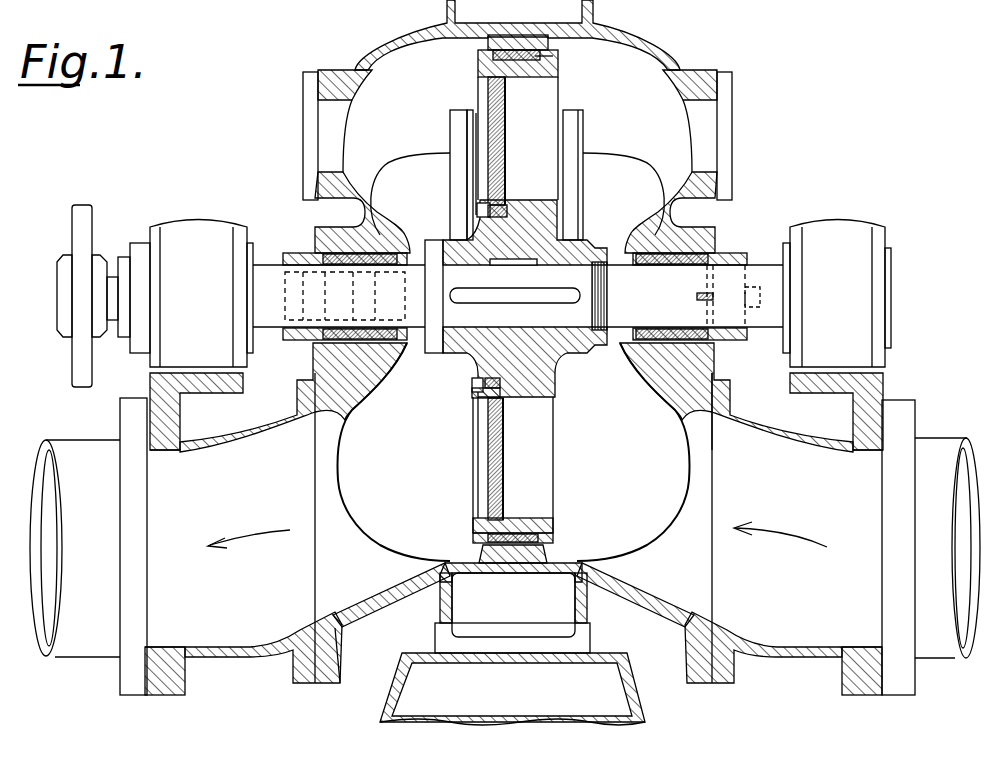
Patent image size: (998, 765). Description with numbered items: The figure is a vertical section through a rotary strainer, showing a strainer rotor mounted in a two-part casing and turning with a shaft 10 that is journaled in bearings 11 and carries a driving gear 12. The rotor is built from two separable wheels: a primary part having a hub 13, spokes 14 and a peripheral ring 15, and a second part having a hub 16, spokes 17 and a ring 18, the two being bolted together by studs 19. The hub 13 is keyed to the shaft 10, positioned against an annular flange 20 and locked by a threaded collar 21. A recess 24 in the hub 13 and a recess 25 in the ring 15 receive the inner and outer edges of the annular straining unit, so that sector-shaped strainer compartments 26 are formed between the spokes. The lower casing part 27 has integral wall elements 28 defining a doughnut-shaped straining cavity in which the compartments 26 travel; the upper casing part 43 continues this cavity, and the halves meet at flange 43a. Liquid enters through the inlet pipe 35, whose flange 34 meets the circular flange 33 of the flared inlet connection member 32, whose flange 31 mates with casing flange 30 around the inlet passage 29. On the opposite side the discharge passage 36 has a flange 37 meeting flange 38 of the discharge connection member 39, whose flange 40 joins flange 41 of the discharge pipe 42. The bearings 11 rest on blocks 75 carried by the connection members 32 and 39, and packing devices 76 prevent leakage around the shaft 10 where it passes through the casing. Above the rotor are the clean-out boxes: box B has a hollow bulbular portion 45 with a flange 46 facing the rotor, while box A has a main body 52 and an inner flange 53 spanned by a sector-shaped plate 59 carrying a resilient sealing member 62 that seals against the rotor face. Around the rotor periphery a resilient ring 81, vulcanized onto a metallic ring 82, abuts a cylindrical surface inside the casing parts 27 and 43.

The shaft 10 is at (260, 270).
The bearings 11 is at (196, 228).
The gear 12 is at (74, 230).
The hub 13 is at (535, 350).
The spokes 14 is at (546, 452).
The peripheral ring 15 is at (551, 524).
The hub 16 is at (476, 398).
The spokes 17 is at (475, 424).
The ring 18 is at (473, 530).
The studs 19 is at (506, 200).
The annular flange 20 is at (432, 355).
The threaded collar 21 is at (598, 355).
The recess 24 is at (506, 392).
The recess 25 is at (503, 510).
The strainer compartments 26 is at (548, 518).
The casing base part 27 is at (468, 568).
The wall elements 28 is at (340, 450).
The inlet passage 29 is at (656, 598).
The flange 30 is at (693, 662).
The flange 31 is at (735, 678).
The inlet connection member 32 is at (815, 655).
The flange 33 is at (852, 690).
The flange 34 is at (900, 685).
The inlet pipe 35 is at (946, 658).
The discharge passage 36 is at (360, 598).
The flange 37 is at (338, 633).
The flange 38 is at (293, 683).
The discharge connection member 39 is at (258, 640).
The flange 40 is at (181, 685).
The flange 41 is at (118, 680).
The discharge pipe 42 is at (82, 650).
The upper casing part 43 is at (380, 35).
The flange 43a is at (713, 228).
The hollow bulbular portion 45 is at (645, 172).
The flange 46 is at (584, 124).
The main body part 52 is at (414, 158).
The inner flange 53 is at (460, 112).
The plate member 59 is at (470, 109).
The resilient sealing member 62 is at (476, 110).
The blocks 75 is at (195, 396).
The packing devices 76 is at (320, 345).
The resilient ring 81 is at (522, 45).
The metallic ring 82 is at (522, 66).